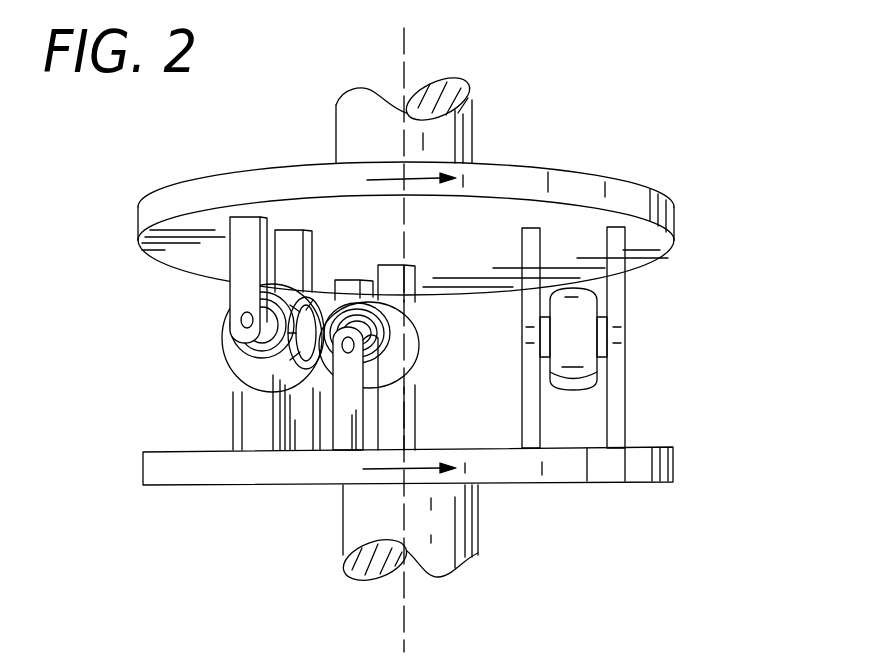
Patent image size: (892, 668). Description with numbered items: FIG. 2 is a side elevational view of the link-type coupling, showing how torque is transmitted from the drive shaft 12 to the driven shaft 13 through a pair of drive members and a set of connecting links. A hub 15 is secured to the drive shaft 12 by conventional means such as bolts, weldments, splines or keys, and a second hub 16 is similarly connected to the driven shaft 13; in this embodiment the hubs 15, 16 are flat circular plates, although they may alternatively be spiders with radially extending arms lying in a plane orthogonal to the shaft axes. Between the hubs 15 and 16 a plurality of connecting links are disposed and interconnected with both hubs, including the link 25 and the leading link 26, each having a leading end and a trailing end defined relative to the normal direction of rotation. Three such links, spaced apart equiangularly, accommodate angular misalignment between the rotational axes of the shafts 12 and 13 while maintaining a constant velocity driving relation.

The drive shaft 12 is at (470, 557).
The driven shaft 13 is at (453, 127).
The hub 15 is at (660, 463).
The hub 16 is at (627, 183).
The link 25 is at (303, 293).
The leading link 26 is at (587, 300).